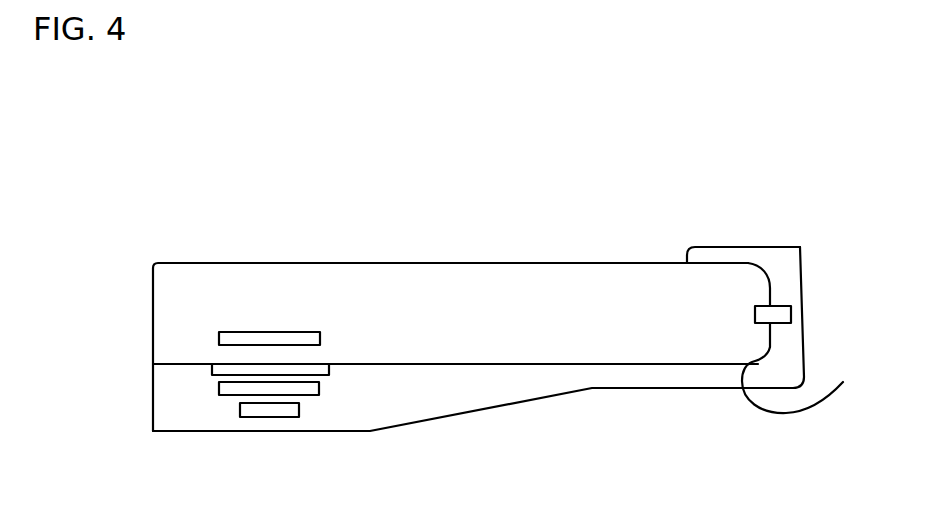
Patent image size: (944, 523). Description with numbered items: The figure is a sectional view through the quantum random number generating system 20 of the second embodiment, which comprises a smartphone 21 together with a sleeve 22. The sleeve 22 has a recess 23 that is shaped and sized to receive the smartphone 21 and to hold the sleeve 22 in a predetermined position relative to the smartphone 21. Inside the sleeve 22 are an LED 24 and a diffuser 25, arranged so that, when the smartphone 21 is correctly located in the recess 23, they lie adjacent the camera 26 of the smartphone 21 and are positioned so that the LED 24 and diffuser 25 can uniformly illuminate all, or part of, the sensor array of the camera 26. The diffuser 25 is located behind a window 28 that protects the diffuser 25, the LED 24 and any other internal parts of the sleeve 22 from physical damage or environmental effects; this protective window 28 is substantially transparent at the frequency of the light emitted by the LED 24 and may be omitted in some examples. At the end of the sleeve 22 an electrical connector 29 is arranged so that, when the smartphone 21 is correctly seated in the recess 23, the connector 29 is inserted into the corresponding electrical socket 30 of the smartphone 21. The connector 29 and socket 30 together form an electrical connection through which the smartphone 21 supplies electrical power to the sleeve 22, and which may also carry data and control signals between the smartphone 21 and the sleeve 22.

The quantum random number generating system 20 is at (238, 197).
The smartphone 21 is at (426, 302).
The sleeve 22 is at (796, 264).
The recess 23 is at (816, 380).
The LED 24 is at (270, 417).
The diffuser 25 is at (248, 396).
The camera 26 is at (219, 341).
The window 28 is at (227, 377).
The electrical connector 29 is at (765, 315).
The electrical socket 30 is at (763, 306).